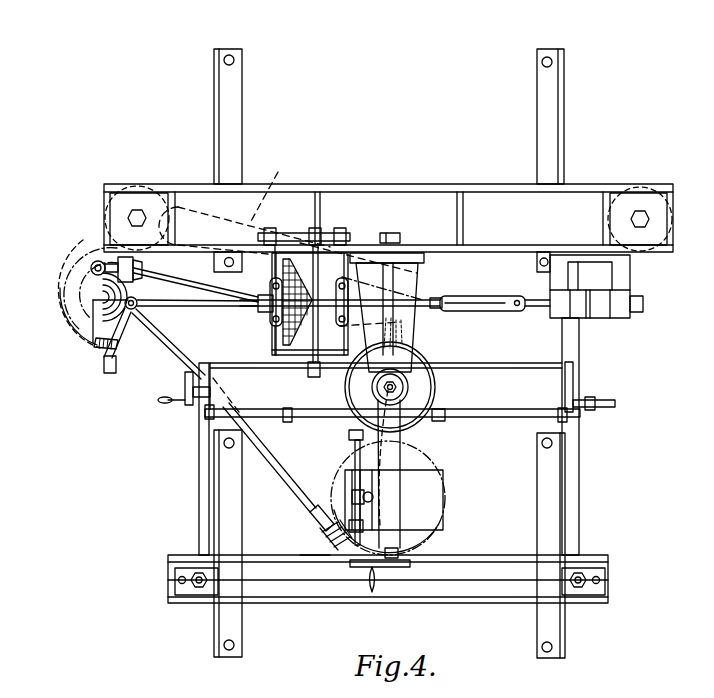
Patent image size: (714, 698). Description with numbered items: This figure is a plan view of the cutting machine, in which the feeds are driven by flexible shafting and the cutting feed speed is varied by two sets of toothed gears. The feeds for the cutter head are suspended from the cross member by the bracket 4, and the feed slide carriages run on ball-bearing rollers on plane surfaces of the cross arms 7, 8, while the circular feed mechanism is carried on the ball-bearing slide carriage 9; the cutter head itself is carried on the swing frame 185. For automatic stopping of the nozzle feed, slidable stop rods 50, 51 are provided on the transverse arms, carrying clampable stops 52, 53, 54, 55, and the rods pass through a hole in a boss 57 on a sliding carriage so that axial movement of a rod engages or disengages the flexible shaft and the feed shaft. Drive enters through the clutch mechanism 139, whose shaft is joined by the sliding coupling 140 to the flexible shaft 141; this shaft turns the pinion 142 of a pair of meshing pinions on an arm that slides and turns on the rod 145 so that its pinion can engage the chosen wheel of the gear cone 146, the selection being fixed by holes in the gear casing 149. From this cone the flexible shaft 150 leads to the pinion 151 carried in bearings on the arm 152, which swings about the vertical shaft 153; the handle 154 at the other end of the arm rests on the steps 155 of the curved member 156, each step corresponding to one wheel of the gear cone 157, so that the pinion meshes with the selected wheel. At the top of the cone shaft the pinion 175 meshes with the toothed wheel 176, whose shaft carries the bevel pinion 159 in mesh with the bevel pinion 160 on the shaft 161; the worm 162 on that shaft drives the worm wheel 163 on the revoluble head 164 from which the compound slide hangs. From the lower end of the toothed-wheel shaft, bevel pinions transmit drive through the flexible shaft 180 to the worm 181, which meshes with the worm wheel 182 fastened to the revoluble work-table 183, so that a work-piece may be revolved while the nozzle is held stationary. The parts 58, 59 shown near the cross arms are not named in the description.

The bracket 4 is at (408, 266).
The cross arm 7 is at (528, 385).
The cross arm 8 is at (402, 460).
The slide carriage 9 is at (432, 500).
The stop rod 50 is at (480, 418).
The stop rod 51 is at (340, 555).
The stop 52 is at (290, 422).
The stop 53 is at (444, 420).
The stop 54 is at (349, 436).
The stop 55 is at (358, 545).
The boss 57 is at (352, 496).
The crank handle 58 is at (206, 416).
The adjusting screw 59 is at (575, 418).
The clutch mechanism 139 is at (590, 318).
The sliding coupling 140 is at (487, 296).
The flexible shaft 141 is at (443, 304).
The pinion 142 is at (323, 278).
The rod 145 is at (313, 232).
The gear cone 146 is at (283, 327).
The gear casing 149 is at (290, 355).
The flexible shaft 150 is at (173, 303).
The pinion 151 is at (135, 310).
The arm 152 is at (118, 345).
The vertical shaft 153 is at (136, 262).
The handle 154 is at (106, 372).
The steps 155 is at (96, 344).
The curved member 156 is at (62, 302).
The gear cone 157 is at (100, 318).
The bevel pinion 159 is at (98, 260).
The bevel pinion 160 is at (118, 262).
The shaft 161 is at (147, 275).
The worm 162 is at (405, 338).
The worm wheel 163 is at (425, 385).
The revoluble head 164 is at (410, 388).
The pinion 175 is at (66, 256).
The toothed wheel 176 is at (75, 248).
The flexible shaft 180 is at (268, 455).
The worm 181 is at (320, 535).
The worm wheel 182 is at (408, 567).
The revoluble work-table 183 is at (436, 533).
The swing frame 185 is at (272, 186).